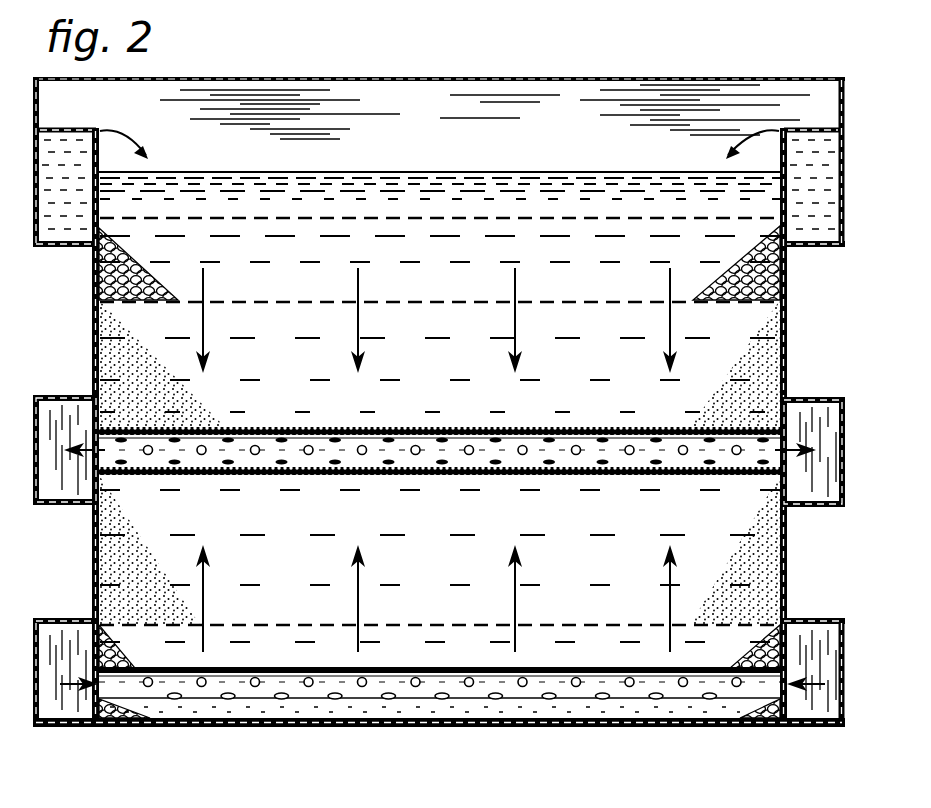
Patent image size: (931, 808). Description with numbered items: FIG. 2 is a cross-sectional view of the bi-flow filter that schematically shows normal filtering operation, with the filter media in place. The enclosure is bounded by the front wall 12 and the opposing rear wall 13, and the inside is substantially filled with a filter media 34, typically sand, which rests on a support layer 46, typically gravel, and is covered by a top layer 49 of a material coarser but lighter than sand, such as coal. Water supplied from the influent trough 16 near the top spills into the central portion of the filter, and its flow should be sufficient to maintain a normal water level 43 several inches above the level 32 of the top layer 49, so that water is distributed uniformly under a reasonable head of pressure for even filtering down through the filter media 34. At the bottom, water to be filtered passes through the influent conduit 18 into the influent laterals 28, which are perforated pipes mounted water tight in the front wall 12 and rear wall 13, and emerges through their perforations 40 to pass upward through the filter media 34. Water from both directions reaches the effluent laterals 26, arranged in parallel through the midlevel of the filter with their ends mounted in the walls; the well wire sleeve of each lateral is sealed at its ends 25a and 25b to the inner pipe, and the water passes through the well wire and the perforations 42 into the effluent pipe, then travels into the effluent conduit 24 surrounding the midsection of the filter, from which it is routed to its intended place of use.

The front wall 12 is at (92, 281).
The rear wall 13 is at (787, 550).
The influent trough 16 is at (35, 246).
The influent conduit 18 is at (33, 700).
The effluent conduit 24 is at (34, 506).
The end of well wire 25a is at (113, 428).
The end of well wire 25b is at (775, 383).
The effluent laterals 26 is at (401, 488).
The influent laterals 28 is at (680, 699).
The level of top layer 32 is at (378, 218).
The filter media 34 is at (616, 373).
The perforations 40 is at (201, 699).
The perforations 42 is at (574, 455).
The normal water level 43 is at (638, 174).
The support layer 46 is at (752, 652).
The top layer 49 is at (788, 282).